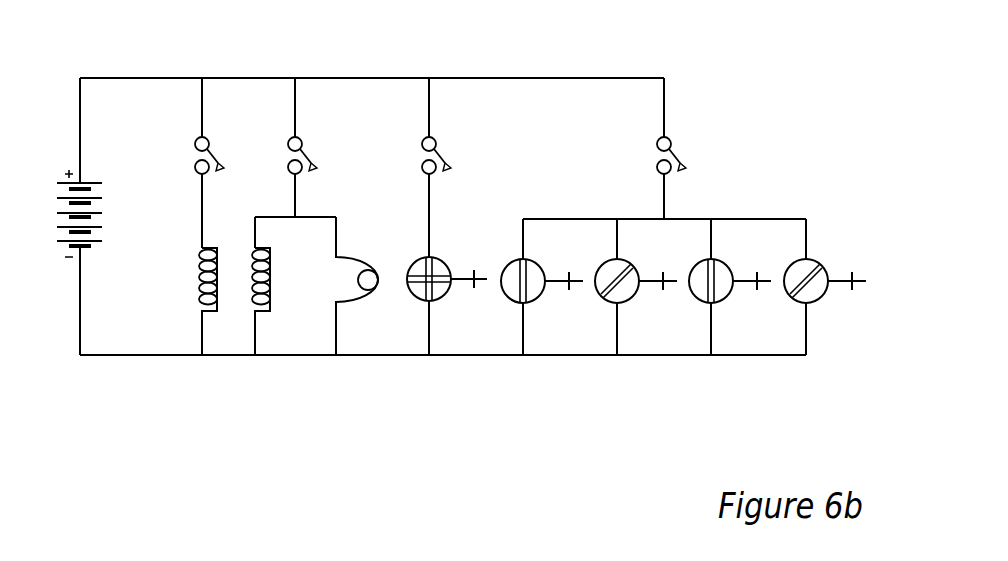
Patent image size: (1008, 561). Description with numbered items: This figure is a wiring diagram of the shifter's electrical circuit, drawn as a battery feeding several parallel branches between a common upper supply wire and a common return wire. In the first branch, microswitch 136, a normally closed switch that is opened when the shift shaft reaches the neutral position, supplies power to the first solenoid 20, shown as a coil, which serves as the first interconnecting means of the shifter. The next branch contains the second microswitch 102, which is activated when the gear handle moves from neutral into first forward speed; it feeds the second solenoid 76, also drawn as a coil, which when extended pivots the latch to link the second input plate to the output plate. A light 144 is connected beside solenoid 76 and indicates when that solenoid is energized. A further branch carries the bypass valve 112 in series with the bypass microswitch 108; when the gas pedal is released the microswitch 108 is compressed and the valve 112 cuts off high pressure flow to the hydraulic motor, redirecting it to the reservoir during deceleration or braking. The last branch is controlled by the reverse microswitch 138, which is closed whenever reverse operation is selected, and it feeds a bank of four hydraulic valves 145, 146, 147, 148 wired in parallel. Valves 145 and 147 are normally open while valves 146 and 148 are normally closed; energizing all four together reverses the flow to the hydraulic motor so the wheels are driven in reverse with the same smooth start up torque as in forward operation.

The first solenoid 20 is at (176, 301).
The second solenoid 76 is at (294, 286).
The second microswitch 102 is at (330, 147).
The bypass microswitch 108 is at (453, 306).
The bypass valve 112 is at (461, 167).
The microswitch 136 is at (179, 163).
The reverse microswitch 138 is at (664, 148).
The light 144 is at (363, 286).
The hydraulic valve 145 is at (542, 287).
The hydraulic valve 146 is at (636, 287).
The hydraulic valve 147 is at (730, 287).
The hydraulic valve 148 is at (825, 287).